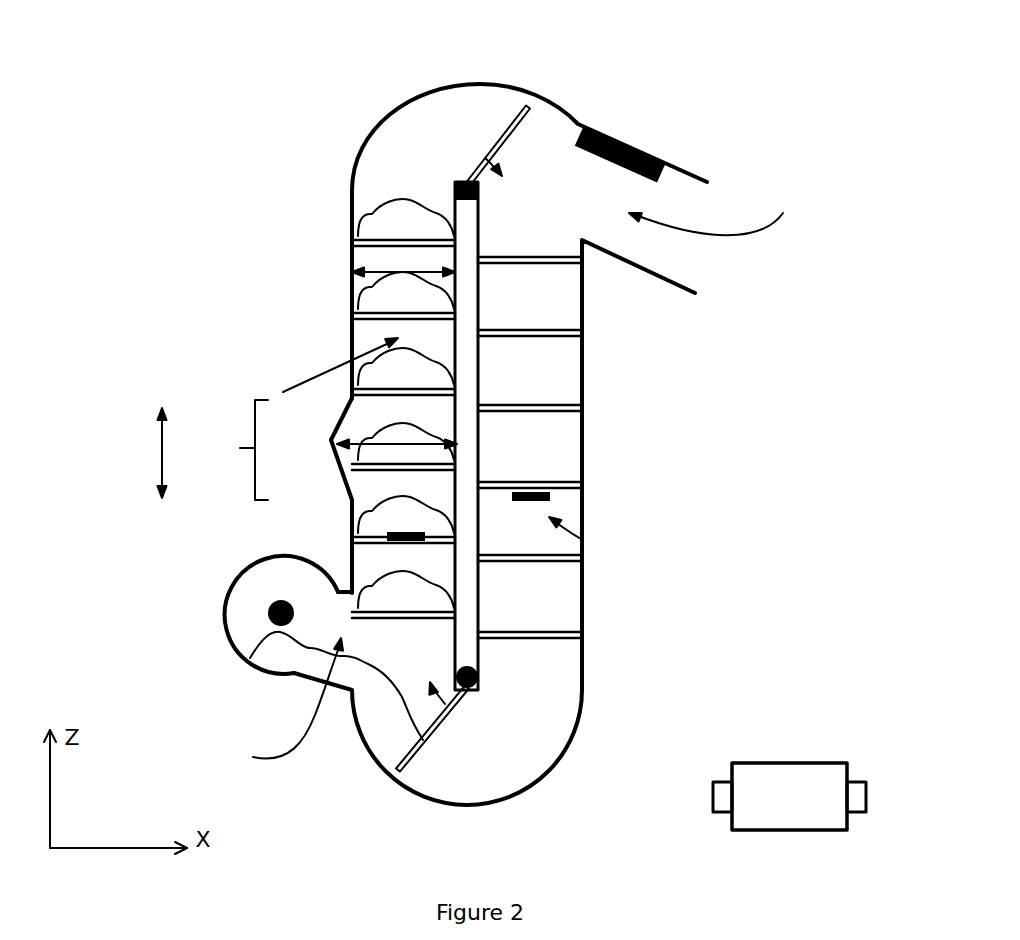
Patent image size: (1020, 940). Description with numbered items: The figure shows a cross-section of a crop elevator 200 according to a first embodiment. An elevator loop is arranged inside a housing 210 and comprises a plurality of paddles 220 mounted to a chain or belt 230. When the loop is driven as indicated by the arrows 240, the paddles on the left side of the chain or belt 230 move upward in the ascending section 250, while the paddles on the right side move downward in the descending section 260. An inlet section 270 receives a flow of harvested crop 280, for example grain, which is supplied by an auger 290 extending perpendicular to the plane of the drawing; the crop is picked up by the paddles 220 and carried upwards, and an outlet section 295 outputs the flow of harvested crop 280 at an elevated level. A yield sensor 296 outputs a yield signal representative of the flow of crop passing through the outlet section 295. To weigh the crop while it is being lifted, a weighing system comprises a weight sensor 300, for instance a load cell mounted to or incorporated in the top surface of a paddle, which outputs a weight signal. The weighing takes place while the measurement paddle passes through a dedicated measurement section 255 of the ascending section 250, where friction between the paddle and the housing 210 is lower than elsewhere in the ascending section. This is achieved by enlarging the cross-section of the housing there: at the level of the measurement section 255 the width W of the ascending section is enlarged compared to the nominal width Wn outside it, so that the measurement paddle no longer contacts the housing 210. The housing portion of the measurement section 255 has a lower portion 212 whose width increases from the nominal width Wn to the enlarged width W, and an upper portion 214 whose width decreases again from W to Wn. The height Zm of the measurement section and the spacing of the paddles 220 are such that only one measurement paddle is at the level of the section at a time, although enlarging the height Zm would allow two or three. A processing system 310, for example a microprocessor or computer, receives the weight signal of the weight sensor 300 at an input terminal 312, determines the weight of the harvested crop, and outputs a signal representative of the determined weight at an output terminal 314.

The crop elevator 200 is at (210, 92).
The housing 210 is at (583, 453).
The lower portion 212 is at (345, 480).
The upper portion 214 is at (347, 423).
The paddles 220 is at (560, 640).
The chain or belt 230 is at (480, 362).
The arrows 240 is at (492, 156).
The ascending section 250 is at (283, 392).
The measurement section 255 is at (231, 450).
The descending section 260 is at (583, 540).
The inlet section 270 is at (272, 704).
The flow of harvested crop 280 is at (402, 223).
The auger 290 is at (251, 572).
The outlet section 295 is at (728, 214).
The yield sensor 296 is at (610, 128).
The weight sensor 300 is at (388, 537).
The processing system 310 is at (787, 785).
The input terminal 312 is at (725, 795).
The output terminal 314 is at (855, 793).
The enlarged width W is at (350, 452).
The nominal width Wn is at (418, 270).
The height of the measurement section Zm is at (139, 453).